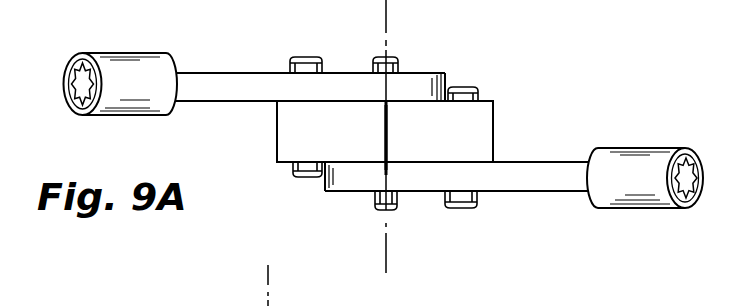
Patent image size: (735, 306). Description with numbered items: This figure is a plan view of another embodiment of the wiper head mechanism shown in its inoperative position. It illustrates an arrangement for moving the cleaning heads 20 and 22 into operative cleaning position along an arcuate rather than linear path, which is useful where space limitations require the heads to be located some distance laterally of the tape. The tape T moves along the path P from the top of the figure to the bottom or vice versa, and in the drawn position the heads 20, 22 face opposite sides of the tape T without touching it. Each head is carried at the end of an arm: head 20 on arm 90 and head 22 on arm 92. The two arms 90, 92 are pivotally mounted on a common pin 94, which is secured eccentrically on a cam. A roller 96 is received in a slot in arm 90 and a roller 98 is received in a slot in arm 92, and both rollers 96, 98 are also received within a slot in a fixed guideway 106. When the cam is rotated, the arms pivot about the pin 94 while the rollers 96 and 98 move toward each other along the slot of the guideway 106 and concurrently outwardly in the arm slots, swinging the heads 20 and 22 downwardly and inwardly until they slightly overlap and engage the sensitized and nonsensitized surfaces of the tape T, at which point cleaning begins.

The cleaning head 20 is at (158, 74).
The cleaning head 22 is at (627, 165).
The arm 90 is at (533, 168).
The arm 92 is at (231, 80).
The pin 94 is at (396, 68).
The roller 96 is at (467, 210).
The roller 98 is at (303, 179).
The fixed guideway 106 is at (277, 149).
The path P is at (386, 20).
The tape T is at (388, 128).